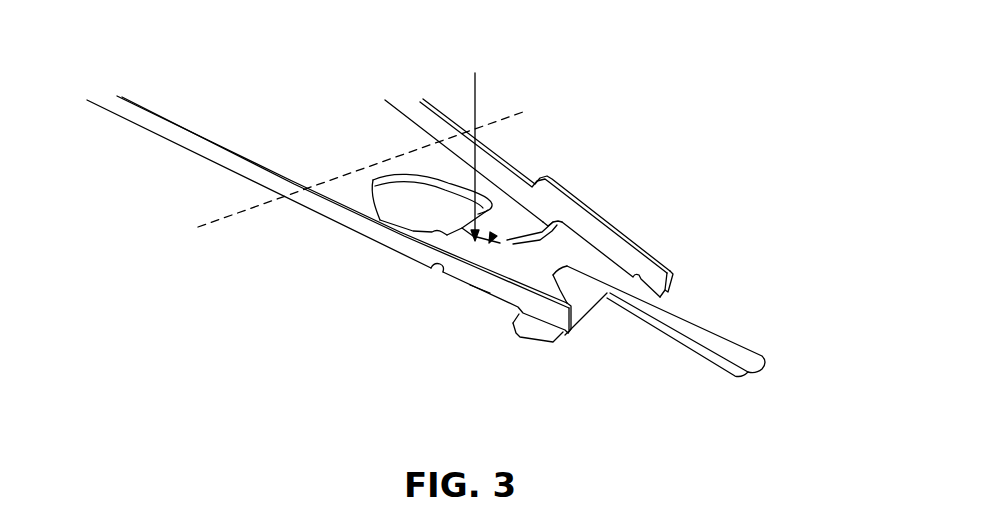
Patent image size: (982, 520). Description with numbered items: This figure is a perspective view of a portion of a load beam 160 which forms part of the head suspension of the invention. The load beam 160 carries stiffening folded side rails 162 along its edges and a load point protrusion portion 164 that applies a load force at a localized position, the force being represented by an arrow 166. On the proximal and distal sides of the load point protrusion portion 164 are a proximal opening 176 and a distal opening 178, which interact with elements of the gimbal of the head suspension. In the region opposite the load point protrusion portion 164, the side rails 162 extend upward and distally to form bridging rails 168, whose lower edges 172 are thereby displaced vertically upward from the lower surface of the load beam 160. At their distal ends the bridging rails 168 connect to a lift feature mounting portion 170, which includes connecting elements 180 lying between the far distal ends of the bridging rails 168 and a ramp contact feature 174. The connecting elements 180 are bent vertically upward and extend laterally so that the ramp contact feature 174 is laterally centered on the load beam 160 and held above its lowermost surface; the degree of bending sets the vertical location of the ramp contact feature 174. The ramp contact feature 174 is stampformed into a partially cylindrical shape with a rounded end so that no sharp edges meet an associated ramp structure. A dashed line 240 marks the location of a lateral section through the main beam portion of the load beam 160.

The load beam 160 is at (623, 114).
The stiffening folded side rails 162 is at (127, 113).
The load point protrusion portion 164 is at (492, 236).
The arrow 166 is at (475, 85).
The bridging rails 168 is at (590, 222).
The lift feature mounting portion 170 is at (530, 337).
The lower edges 172 is at (595, 240).
The ramp contact feature 174 is at (693, 327).
The proximal opening 176 is at (402, 203).
The distal opening 178 is at (547, 252).
The connecting elements 180 is at (578, 298).
The dashed line 240 is at (235, 212).